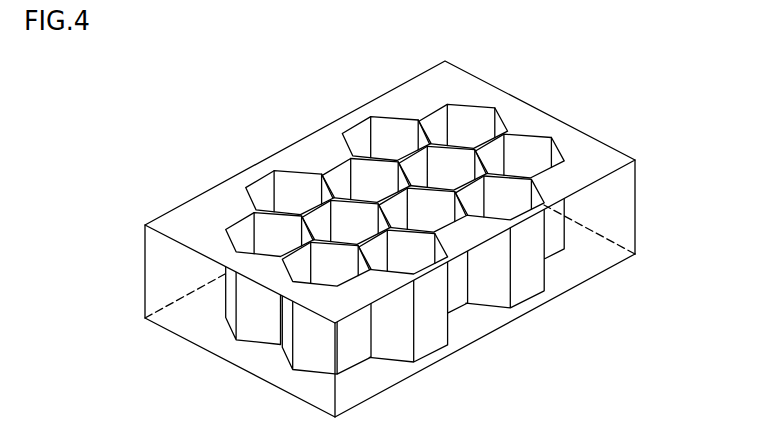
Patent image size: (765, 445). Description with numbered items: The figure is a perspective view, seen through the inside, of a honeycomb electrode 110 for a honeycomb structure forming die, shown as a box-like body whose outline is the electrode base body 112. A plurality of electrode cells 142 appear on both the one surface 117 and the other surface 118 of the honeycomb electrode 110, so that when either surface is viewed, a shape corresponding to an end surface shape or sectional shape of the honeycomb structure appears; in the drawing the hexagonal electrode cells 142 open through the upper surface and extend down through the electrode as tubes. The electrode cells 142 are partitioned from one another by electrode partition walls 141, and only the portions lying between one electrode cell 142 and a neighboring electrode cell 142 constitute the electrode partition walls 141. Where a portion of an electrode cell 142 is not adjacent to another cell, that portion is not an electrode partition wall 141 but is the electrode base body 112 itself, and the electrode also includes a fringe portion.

The honeycomb electrode 110 is at (424, 227).
The electrode base body 112 is at (628, 204).
The one surface 117 is at (572, 268).
The other surface 118 is at (607, 168).
The electrode partition wall 141 is at (428, 135).
The electrode cell 142 is at (292, 180).